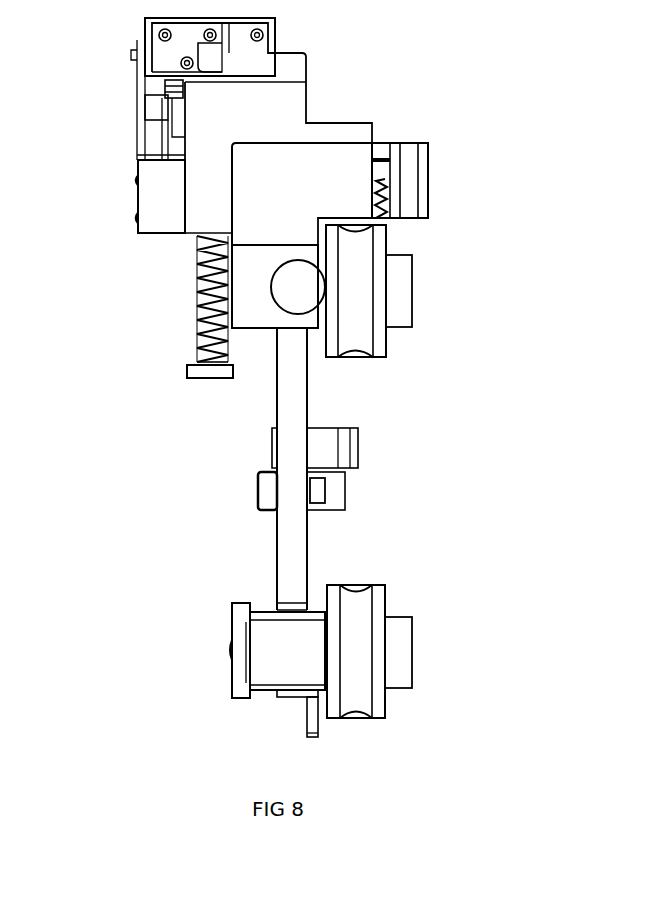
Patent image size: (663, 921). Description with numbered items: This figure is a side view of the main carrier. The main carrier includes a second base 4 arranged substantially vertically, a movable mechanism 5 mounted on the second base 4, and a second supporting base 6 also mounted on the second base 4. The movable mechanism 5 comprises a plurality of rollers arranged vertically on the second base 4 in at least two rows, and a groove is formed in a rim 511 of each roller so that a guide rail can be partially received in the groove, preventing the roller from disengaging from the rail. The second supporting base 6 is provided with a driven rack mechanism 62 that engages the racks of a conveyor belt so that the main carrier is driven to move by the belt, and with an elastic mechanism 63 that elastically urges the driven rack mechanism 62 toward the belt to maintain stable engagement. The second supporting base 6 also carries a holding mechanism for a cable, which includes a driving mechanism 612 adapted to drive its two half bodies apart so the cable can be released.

The second supporting base 6 is at (200, 170).
The driving mechanism 612 is at (200, 297).
The driven rack mechanism 62 is at (410, 158).
The elastic mechanism 63 is at (383, 198).
The second base 4 is at (288, 502).
The rim 511 is at (353, 620).
The movable mechanism 5 is at (398, 645).